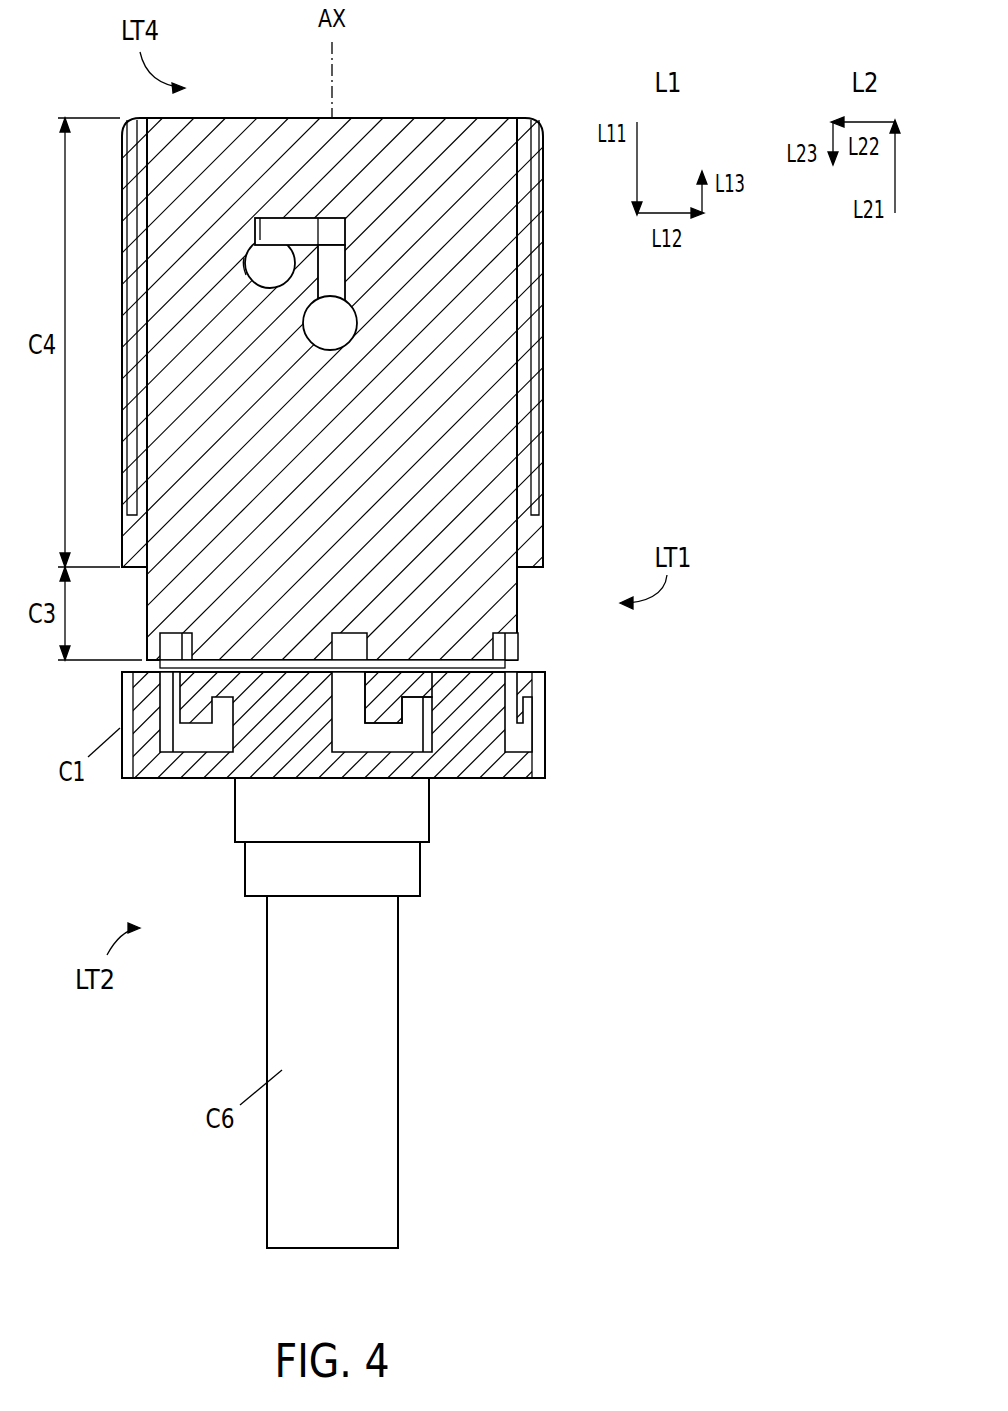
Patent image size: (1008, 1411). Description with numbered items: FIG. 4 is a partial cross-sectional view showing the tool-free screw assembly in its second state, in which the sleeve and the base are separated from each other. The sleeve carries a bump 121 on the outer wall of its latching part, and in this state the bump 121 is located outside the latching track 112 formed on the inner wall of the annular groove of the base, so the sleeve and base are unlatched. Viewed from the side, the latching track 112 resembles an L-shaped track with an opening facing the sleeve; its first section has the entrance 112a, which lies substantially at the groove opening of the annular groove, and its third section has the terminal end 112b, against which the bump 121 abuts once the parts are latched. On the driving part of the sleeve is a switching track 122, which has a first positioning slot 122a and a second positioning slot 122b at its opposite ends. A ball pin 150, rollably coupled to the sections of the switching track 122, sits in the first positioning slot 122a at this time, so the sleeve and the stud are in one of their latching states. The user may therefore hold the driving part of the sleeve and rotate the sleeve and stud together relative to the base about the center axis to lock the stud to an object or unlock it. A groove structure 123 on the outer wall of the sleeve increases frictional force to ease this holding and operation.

The latching track 112 is at (337, 960).
The entrance 112a is at (328, 690).
The terminal end 112b is at (414, 710).
The bump 121 is at (350, 645).
The switching track 122 is at (300, 228).
The first positioning slot 122a is at (362, 316).
The second positioning slot 122b is at (266, 266).
The groove structure 123 is at (545, 300).
The ball pin 150 is at (338, 330).